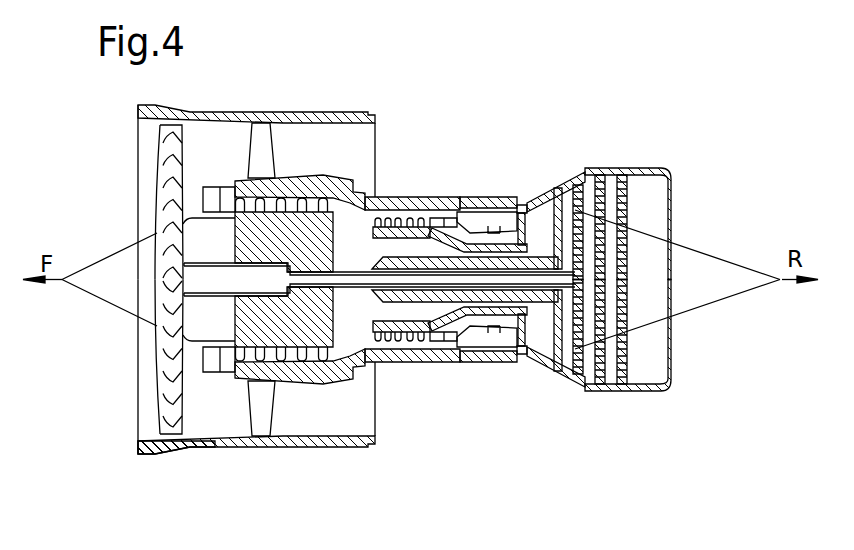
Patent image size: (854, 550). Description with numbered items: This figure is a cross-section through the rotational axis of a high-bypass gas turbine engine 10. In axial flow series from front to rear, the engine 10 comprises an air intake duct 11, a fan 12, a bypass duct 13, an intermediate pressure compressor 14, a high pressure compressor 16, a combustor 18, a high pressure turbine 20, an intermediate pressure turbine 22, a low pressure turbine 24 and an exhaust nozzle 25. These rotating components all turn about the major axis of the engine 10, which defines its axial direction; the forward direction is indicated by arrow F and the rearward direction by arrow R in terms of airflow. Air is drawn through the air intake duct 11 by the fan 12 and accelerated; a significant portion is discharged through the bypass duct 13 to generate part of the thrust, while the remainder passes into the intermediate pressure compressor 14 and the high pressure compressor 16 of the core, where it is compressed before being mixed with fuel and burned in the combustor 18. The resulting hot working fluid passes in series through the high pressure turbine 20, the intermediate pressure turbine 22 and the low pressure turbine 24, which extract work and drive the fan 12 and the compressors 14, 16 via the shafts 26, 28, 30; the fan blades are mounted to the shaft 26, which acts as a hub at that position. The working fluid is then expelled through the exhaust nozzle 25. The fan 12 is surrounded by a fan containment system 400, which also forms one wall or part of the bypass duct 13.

The bypass gas turbine engine 10 is at (474, 117).
The air intake duct 11 is at (150, 134).
The fan 12 is at (170, 190).
The bypass duct 13 is at (351, 158).
The intermediate pressure compressor 14 is at (240, 203).
The high pressure compressor 16 is at (428, 220).
The combustor 18 is at (482, 213).
The high pressure turbine 20 is at (523, 203).
The intermediate pressure turbine 22 is at (563, 183).
The low pressure turbine 24 is at (622, 175).
The exhaust nozzle 25 is at (652, 200).
The shaft 26 is at (217, 283).
The shaft 28 is at (430, 298).
The shaft 30 is at (500, 307).
The fan containment system 400 is at (182, 460).